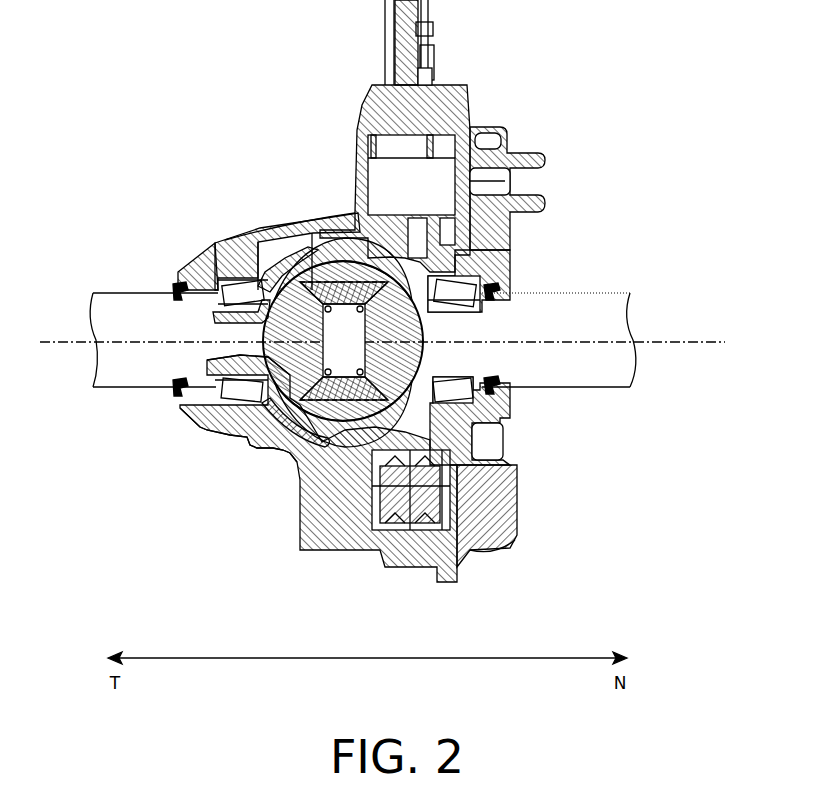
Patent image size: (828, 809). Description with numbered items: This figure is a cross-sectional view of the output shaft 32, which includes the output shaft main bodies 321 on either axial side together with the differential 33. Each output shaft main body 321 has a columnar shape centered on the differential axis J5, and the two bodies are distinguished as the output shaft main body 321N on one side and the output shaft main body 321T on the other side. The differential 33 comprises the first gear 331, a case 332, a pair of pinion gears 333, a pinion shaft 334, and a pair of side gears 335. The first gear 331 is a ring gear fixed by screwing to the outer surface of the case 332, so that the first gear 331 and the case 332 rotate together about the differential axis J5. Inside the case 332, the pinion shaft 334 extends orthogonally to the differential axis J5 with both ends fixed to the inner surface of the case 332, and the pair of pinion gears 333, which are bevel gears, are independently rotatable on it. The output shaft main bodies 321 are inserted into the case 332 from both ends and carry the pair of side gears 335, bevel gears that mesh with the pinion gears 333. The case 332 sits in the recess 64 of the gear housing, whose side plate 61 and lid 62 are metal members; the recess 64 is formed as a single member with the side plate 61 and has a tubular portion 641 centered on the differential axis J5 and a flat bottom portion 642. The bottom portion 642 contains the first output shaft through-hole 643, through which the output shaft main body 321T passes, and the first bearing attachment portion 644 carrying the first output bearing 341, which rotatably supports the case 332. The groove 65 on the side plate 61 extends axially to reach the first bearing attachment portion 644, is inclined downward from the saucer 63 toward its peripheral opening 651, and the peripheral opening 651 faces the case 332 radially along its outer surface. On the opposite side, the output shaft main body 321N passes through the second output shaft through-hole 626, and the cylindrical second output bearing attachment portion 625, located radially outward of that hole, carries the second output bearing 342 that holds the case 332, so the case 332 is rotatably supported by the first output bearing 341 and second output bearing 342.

The output shaft 32 is at (640, 362).
The output shaft main body 321 is at (84, 312).
The output shaft main body on the other side T 321T is at (98, 293).
The output shaft main body on one side N 321N is at (620, 300).
The differential axis J5 is at (709, 341).
The differential 33 is at (304, 545).
The first gear 331 is at (373, 537).
The case 332 is at (508, 264).
The pinion gear 333 is at (348, 250).
The pinion shaft 334 is at (290, 425).
The side gear 335 is at (262, 350).
The first output bearing 341 is at (222, 305).
The second output bearing 342 is at (484, 380).
The side plate 61 is at (372, 110).
The lid 62 is at (473, 108).
The saucer 63 is at (370, 178).
The recess 64 is at (247, 245).
The tubular portion 641 is at (230, 432).
The bottom portion 642 is at (176, 288).
The first output shaft through-hole 643 is at (178, 405).
The first bearing attachment portion 644 is at (236, 272).
The groove 65 is at (288, 262).
The peripheral opening 651 is at (300, 250).
The second output bearing attachment portion 625 is at (507, 433).
The second output shaft through-hole 626 is at (507, 398).